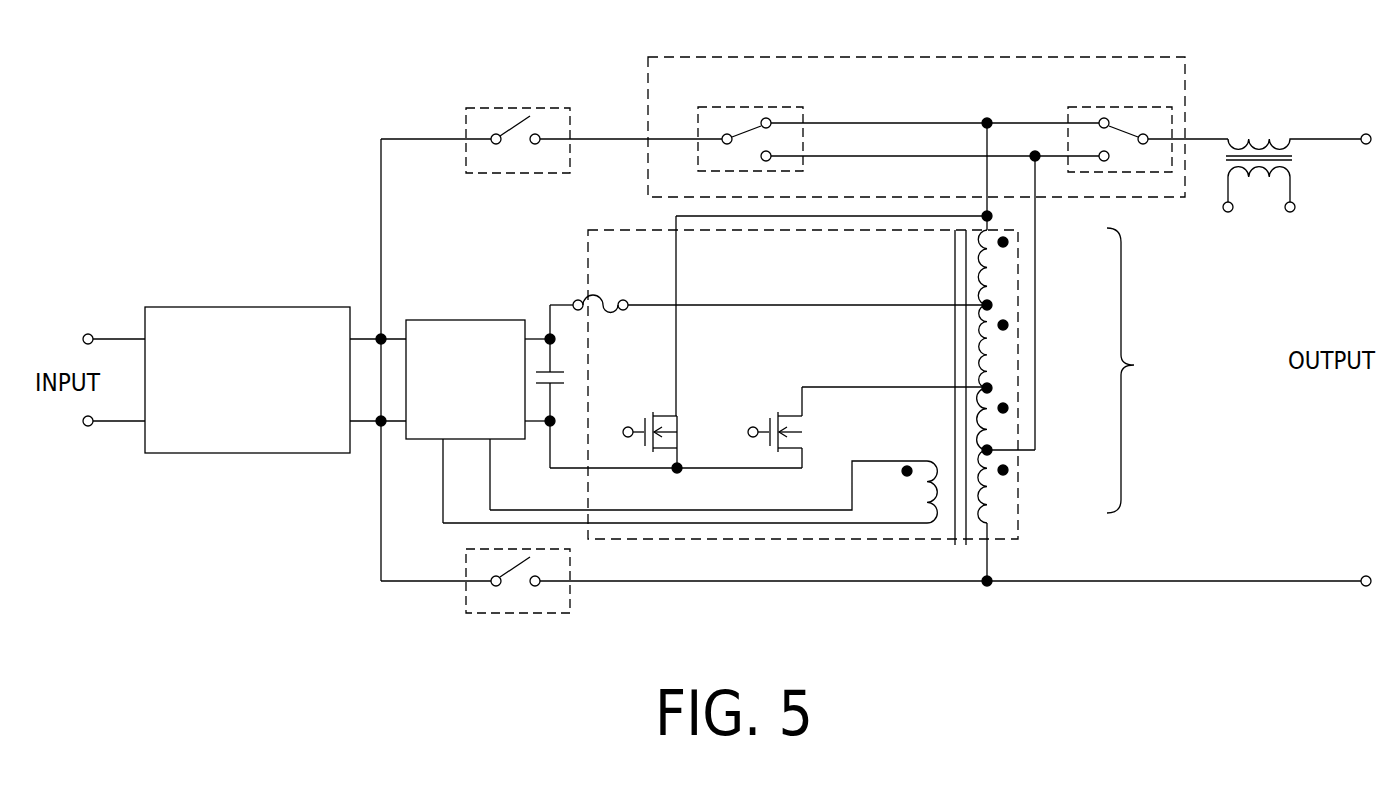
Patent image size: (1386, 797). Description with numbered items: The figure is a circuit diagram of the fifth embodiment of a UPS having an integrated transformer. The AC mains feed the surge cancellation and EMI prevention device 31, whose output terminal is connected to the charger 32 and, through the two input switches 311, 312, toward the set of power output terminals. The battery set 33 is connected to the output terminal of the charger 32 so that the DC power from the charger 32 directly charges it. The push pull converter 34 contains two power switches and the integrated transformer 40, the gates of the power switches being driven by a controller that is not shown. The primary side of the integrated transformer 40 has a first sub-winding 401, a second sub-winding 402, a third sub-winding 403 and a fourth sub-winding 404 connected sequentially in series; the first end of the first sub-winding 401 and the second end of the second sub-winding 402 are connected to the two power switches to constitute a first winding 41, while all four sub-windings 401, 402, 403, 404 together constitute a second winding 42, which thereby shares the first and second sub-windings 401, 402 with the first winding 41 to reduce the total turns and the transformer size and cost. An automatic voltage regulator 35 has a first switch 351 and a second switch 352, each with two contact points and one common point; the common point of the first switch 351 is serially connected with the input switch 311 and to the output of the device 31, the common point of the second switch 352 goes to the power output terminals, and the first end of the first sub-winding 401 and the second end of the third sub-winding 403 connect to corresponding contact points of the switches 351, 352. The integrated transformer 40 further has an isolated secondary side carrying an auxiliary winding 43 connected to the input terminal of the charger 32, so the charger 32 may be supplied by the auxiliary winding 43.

The surge cancellation and EMI prevention device 31 is at (218, 453).
The input switch 311 is at (497, 108).
The input switch 312 is at (510, 613).
The charger 32 is at (433, 320).
The battery set 33 is at (560, 380).
The push pull converter 34 is at (655, 230).
The automatic voltage regulator 35 is at (942, 57).
The first switch 351 is at (732, 107).
The second switch 352 is at (1089, 107).
The integrated transformer 40 is at (1045, 424).
The first winding 41 is at (941, 387).
The second winding 42 is at (1075, 375).
The first sub-winding 401 is at (1035, 267).
The second sub-winding 402 is at (1036, 346).
The third sub-winding 403 is at (1035, 419).
The fourth sub-winding 404 is at (1035, 486).
The auxiliary winding 43 is at (690, 475).